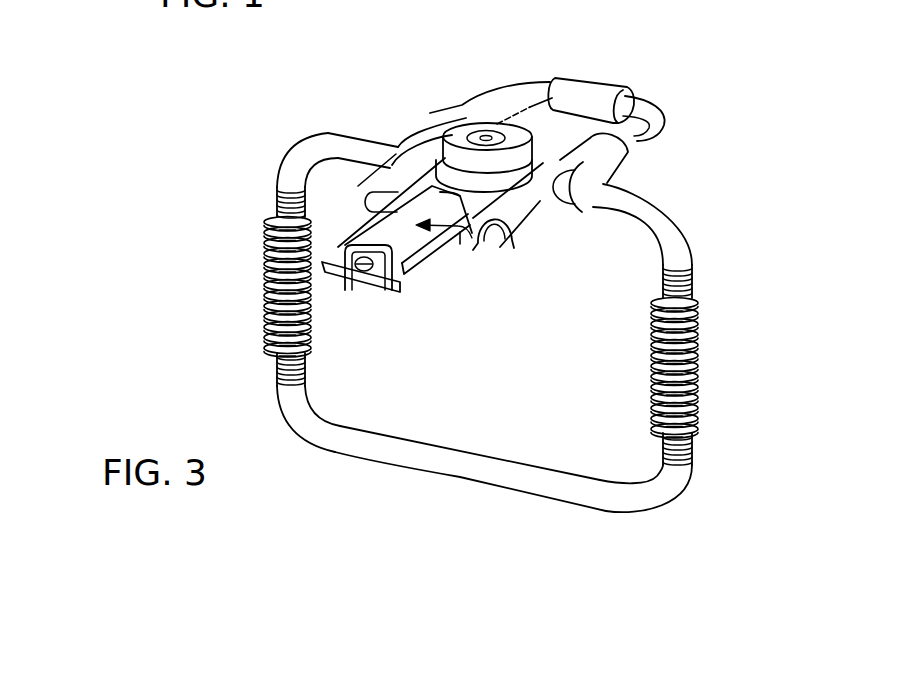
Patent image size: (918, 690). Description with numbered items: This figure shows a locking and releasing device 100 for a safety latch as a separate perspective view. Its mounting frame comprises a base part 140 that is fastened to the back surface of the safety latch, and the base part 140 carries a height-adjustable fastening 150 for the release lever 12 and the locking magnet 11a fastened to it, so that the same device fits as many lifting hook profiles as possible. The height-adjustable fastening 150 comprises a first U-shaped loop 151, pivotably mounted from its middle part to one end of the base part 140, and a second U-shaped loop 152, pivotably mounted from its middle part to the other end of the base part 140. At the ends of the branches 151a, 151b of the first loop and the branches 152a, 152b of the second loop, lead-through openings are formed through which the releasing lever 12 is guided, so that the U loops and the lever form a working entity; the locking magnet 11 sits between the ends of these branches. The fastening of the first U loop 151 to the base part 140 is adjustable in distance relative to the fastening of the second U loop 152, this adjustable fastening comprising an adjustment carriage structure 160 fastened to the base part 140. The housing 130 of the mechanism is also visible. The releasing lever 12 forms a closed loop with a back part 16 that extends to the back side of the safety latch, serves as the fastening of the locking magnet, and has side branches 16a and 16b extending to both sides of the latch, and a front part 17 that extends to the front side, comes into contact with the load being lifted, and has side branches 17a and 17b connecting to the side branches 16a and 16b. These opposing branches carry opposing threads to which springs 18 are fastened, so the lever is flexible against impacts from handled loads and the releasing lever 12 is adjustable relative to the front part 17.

The locking and releasing device 100 is at (176, 274).
The release lever 12 is at (378, 486).
The back part 16 is at (368, 146).
The side branch 16a is at (672, 248).
The side branch 16b is at (283, 160).
The front part 17 is at (457, 470).
The side branch 17a is at (692, 466).
The side branch 17b is at (279, 388).
The springs 18 is at (262, 237).
The height-adjustable fastening 150 is at (470, 77).
The housing 130 is at (510, 287).
The locking magnet 11 is at (442, 125).
The locking magnet 11a is at (466, 124).
The second U-shaped loop 152 is at (540, 90).
The branch 152a is at (652, 138).
The branch 152b is at (497, 104).
The first U-shaped loop 151 is at (403, 273).
The branch 151a is at (463, 264).
The branch 151b is at (350, 240).
The base part 140 is at (400, 306).
The adjustment carriage structure 160 is at (483, 238).